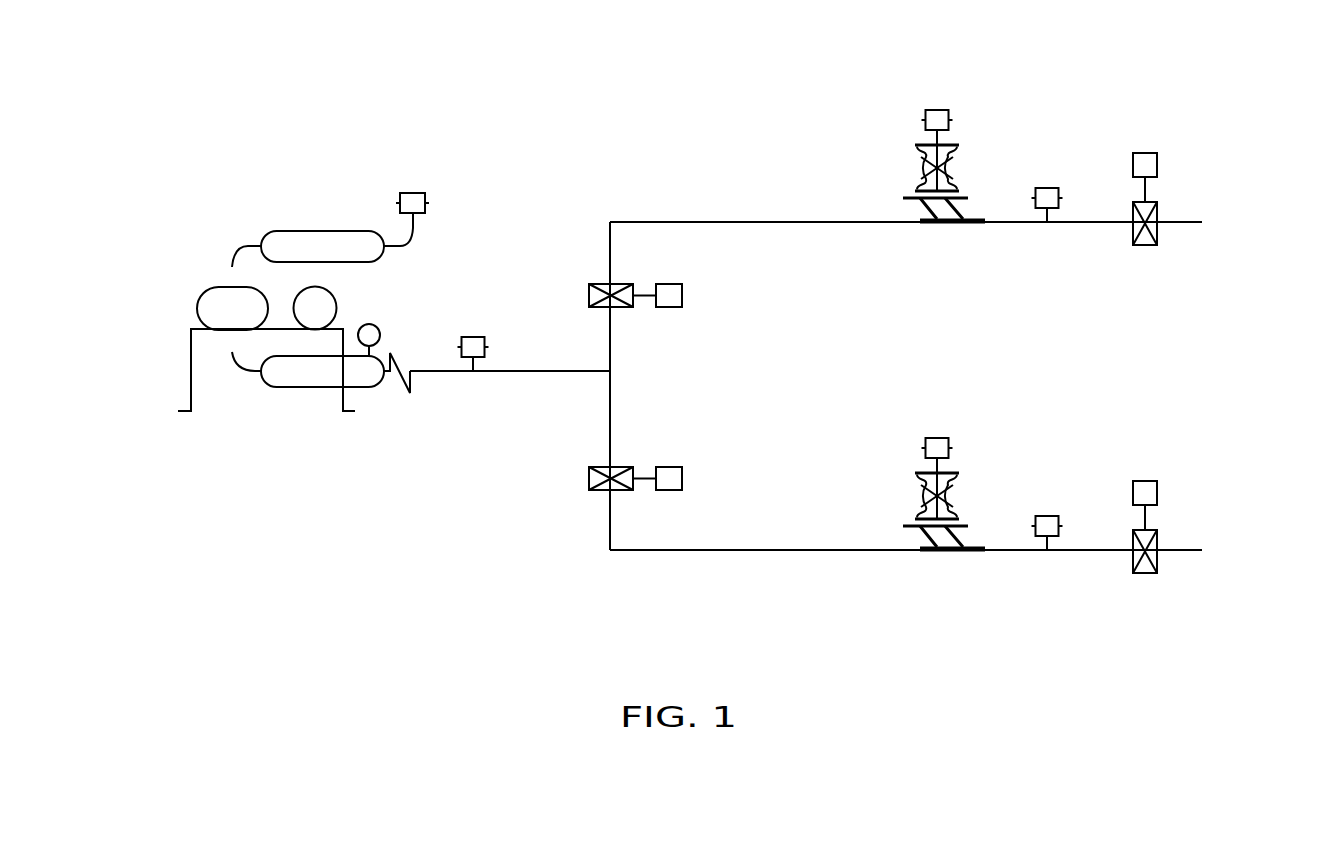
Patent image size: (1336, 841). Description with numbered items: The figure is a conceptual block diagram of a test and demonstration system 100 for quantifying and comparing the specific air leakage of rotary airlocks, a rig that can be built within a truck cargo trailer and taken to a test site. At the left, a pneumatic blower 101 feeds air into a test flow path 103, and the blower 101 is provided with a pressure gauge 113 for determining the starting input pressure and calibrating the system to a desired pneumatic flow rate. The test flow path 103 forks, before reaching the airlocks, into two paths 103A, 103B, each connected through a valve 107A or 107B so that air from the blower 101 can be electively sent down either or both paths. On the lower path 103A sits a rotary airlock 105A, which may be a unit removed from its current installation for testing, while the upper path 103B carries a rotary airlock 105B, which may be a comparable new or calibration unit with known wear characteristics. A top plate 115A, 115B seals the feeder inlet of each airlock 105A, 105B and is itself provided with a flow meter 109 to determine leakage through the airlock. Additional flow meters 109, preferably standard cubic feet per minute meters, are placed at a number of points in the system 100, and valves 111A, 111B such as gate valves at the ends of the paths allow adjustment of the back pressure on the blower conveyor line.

The test and demonstration system 100 is at (643, 97).
The pneumatic blower 101 is at (210, 277).
The test flow path 103 is at (513, 382).
The first air path 103A is at (747, 542).
The second air path 103B is at (727, 208).
The rotary airlock 105A is at (960, 488).
The rotary airlock 105B is at (960, 160).
The valve 107A is at (645, 460).
The valve 107B is at (645, 278).
The flow meter 109 is at (480, 322).
The valve 111A is at (1148, 470).
The valve 111B is at (1148, 142).
The pressure gauge 113 is at (380, 312).
The top plate 115A is at (952, 458).
The top plate 115B is at (952, 130).